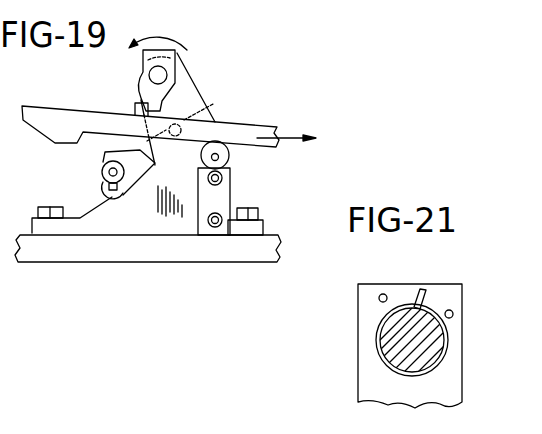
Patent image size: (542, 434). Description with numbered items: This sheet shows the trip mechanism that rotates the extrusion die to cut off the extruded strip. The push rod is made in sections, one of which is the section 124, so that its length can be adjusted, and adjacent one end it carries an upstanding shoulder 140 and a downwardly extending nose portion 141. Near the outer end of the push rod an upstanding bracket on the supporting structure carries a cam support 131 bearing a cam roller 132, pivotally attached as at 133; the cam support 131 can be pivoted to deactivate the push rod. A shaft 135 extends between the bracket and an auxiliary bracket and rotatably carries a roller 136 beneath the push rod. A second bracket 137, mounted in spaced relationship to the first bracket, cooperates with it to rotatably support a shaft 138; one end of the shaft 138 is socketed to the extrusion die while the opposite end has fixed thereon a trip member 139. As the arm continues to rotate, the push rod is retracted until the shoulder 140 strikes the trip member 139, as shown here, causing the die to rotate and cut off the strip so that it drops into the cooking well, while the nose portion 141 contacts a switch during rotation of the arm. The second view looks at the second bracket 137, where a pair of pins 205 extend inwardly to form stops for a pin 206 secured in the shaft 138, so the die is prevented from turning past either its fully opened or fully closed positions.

In FIG. 19, the push rod section 124 is at (268, 130).
In FIG. 19, the cam support 131 is at (140, 177).
In FIG. 19, the cam roller 132 is at (102, 170).
In FIG. 19, the pivot 133 is at (113, 190).
In FIG. 19, the shaft 135 is at (219, 158).
In FIG. 19, the roller 136 is at (218, 140).
In FIG. 21, the second bracket 137 is at (370, 387).
In FIG. 19, the shaft 138 is at (168, 76).
In FIG. 21, the shaft 138 is at (387, 344).
In FIG. 19, the trip member 139 is at (158, 55).
In FIG. 19, the shoulder 140 is at (137, 104).
In FIG. 19, the nose portion 141 is at (58, 145).
In FIG. 21, the pins 205 is at (381, 295).
In FIG. 21, the pin 206 is at (423, 288).